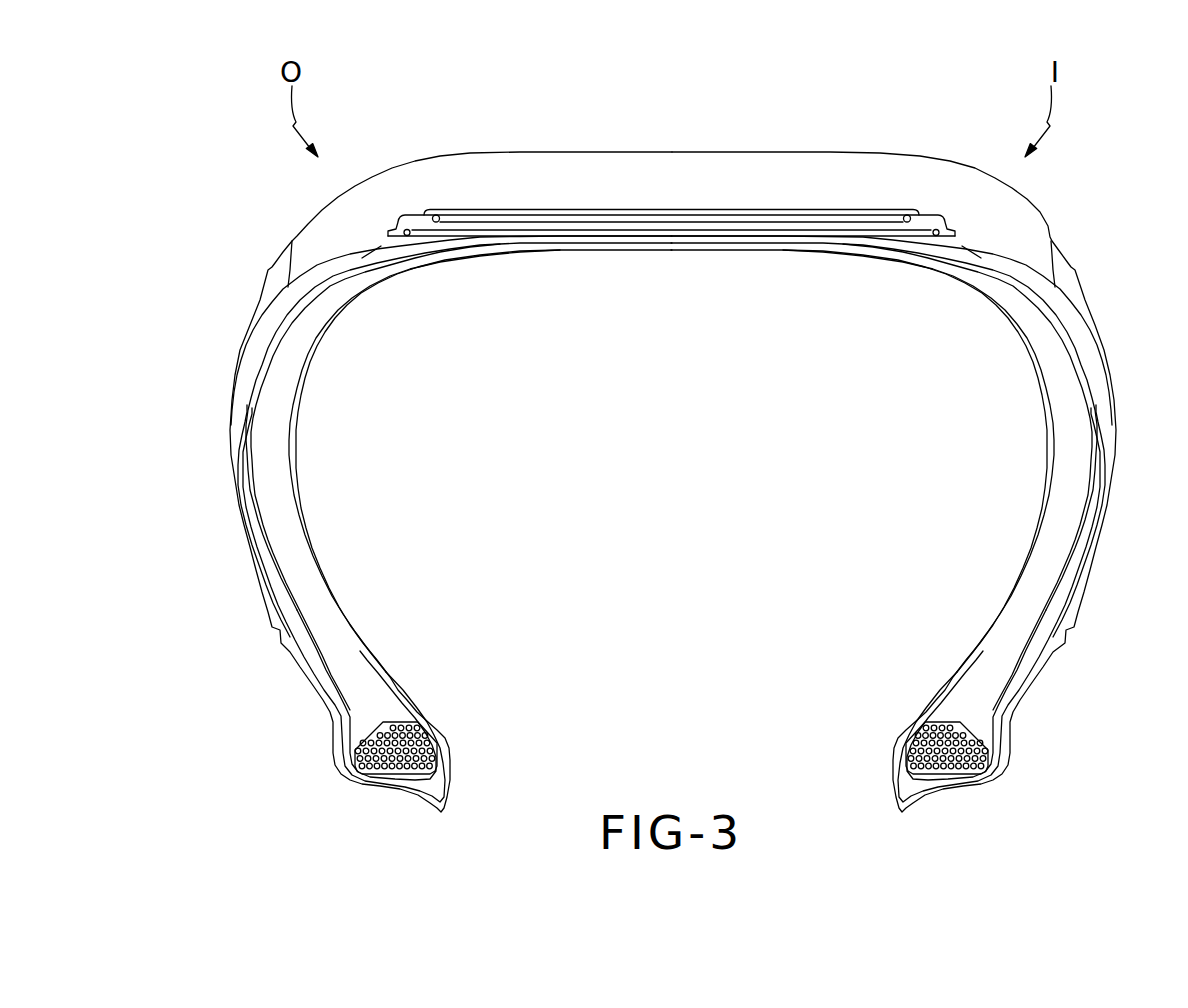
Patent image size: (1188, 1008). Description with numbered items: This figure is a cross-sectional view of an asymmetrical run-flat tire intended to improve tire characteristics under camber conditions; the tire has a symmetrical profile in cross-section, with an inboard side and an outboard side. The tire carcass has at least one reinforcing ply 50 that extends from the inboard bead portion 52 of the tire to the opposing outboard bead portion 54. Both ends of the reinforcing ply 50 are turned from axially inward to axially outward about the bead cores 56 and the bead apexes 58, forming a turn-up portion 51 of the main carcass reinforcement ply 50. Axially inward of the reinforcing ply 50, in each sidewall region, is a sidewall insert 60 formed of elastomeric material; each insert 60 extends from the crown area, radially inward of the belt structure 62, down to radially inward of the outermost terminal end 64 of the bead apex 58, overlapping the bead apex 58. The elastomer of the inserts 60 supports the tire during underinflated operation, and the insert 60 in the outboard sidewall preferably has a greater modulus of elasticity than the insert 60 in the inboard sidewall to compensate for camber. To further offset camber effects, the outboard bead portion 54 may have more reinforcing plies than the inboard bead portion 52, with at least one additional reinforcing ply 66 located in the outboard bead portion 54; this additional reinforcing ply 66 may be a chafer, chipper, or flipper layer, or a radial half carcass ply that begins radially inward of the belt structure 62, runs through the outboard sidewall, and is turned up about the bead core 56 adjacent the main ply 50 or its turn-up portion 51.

The reinforcing ply 50 is at (1086, 378).
The turn-up portion 51 is at (250, 490).
The inboard bead portion 52 is at (875, 713).
The outboard bead portion 54 is at (470, 731).
The bead core 56 is at (410, 750).
The bead apex 58 is at (357, 660).
The sidewall insert 60 is at (273, 427).
The belt structure 62 is at (468, 216).
The outermost terminal end 64 is at (263, 540).
The additional reinforcing ply 66 is at (238, 465).